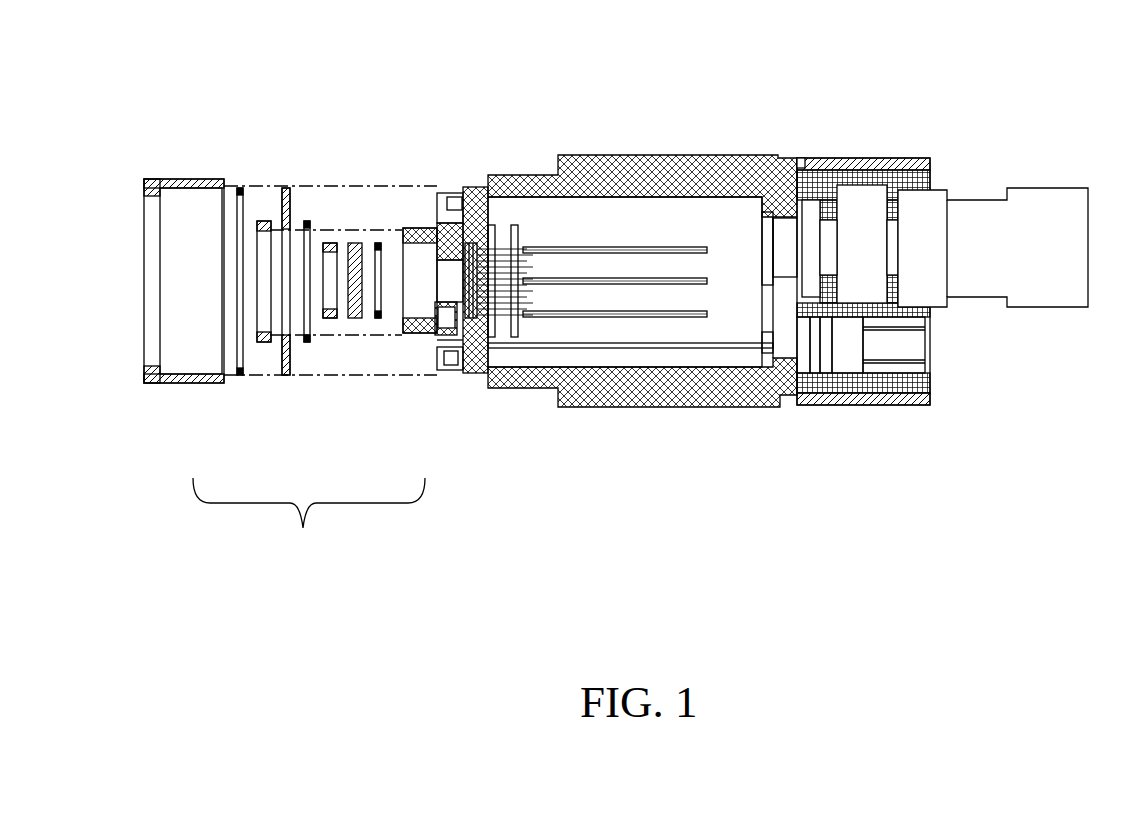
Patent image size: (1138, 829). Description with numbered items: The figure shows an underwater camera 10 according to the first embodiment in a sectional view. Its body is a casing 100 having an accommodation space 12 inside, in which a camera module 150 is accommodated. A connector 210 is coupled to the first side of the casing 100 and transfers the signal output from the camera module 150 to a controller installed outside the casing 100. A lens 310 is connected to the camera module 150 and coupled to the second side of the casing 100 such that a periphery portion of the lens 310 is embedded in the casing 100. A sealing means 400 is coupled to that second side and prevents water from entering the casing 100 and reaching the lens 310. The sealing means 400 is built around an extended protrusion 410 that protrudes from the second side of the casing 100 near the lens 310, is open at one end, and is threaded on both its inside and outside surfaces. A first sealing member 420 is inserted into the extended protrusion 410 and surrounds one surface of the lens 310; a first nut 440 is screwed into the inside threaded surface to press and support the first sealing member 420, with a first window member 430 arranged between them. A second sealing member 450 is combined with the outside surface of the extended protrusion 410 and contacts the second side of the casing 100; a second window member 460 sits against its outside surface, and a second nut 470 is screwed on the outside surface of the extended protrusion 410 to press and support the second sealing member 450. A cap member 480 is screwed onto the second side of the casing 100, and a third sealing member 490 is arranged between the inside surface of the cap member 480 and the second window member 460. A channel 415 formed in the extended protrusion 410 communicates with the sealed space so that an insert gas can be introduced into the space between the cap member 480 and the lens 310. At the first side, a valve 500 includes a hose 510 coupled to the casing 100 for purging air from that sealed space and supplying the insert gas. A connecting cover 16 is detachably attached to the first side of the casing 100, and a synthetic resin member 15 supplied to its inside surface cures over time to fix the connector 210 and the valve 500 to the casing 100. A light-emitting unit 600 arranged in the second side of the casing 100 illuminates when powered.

The connector device 10 is at (756, 138).
The accommodation space 12 is at (610, 326).
The synthetic resin member 15 is at (829, 168).
The connecting cover 16 is at (876, 165).
The casing 100 is at (707, 386).
The camera module 150 is at (671, 313).
The connector 210 is at (977, 198).
The lens 310 is at (453, 291).
The sealing means 400 is at (309, 516).
The extended protrusion 410 is at (416, 334).
The channel 415 is at (445, 372).
The first sealing member 420 is at (382, 319).
The first window member 430 is at (358, 319).
The first nut 440 is at (335, 319).
The second sealing member 450 is at (311, 341).
The second window member 460 is at (288, 375).
The second nut 470 is at (266, 344).
The cap member 480 is at (204, 384).
The third sealing member 490 is at (240, 377).
The valve 500 is at (896, 346).
The hose 510 is at (745, 346).
The light-emitting unit 600 is at (455, 203).